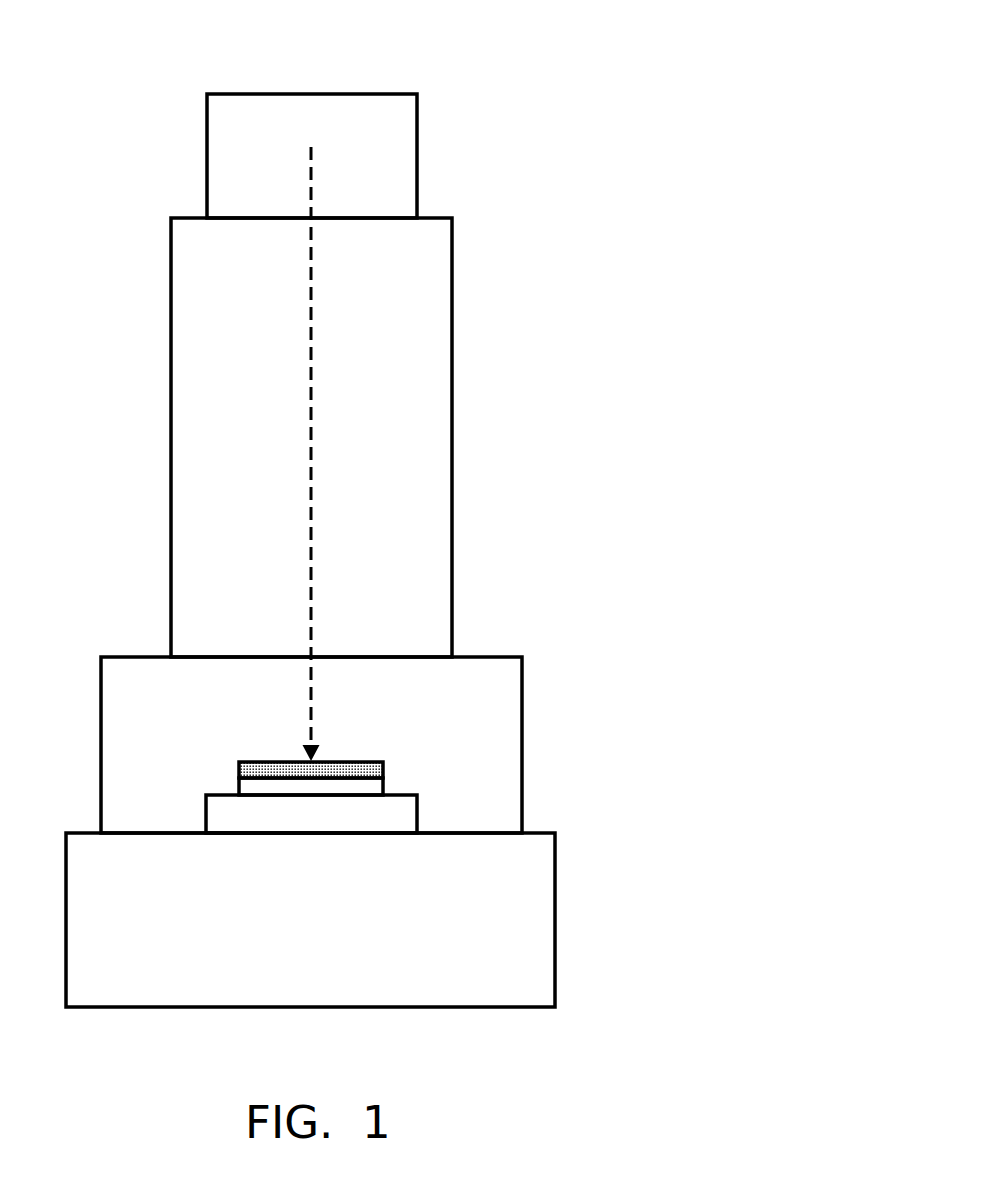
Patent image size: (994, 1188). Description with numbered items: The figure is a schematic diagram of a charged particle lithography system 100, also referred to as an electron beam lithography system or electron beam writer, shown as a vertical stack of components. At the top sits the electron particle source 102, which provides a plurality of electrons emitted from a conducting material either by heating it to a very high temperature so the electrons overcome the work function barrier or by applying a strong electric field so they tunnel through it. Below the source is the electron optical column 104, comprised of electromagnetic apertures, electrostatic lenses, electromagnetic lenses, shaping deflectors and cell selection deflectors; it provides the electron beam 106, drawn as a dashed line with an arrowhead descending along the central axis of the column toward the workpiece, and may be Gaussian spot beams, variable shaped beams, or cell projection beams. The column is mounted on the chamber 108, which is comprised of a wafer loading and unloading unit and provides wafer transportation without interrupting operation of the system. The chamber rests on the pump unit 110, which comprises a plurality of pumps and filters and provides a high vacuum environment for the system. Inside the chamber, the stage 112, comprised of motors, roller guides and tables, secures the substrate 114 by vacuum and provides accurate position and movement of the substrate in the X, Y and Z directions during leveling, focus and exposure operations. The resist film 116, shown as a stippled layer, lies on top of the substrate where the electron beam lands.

The charged particle lithography system 100 is at (598, 76).
The electron particle source 102 is at (417, 157).
The electron optical column 104 is at (452, 548).
The electron beam 106 is at (311, 427).
The chamber 108 is at (522, 690).
The pump unit 110 is at (555, 920).
The stage 112 is at (417, 813).
The substrate 114 is at (383, 787).
The resist film 116 is at (383, 768).